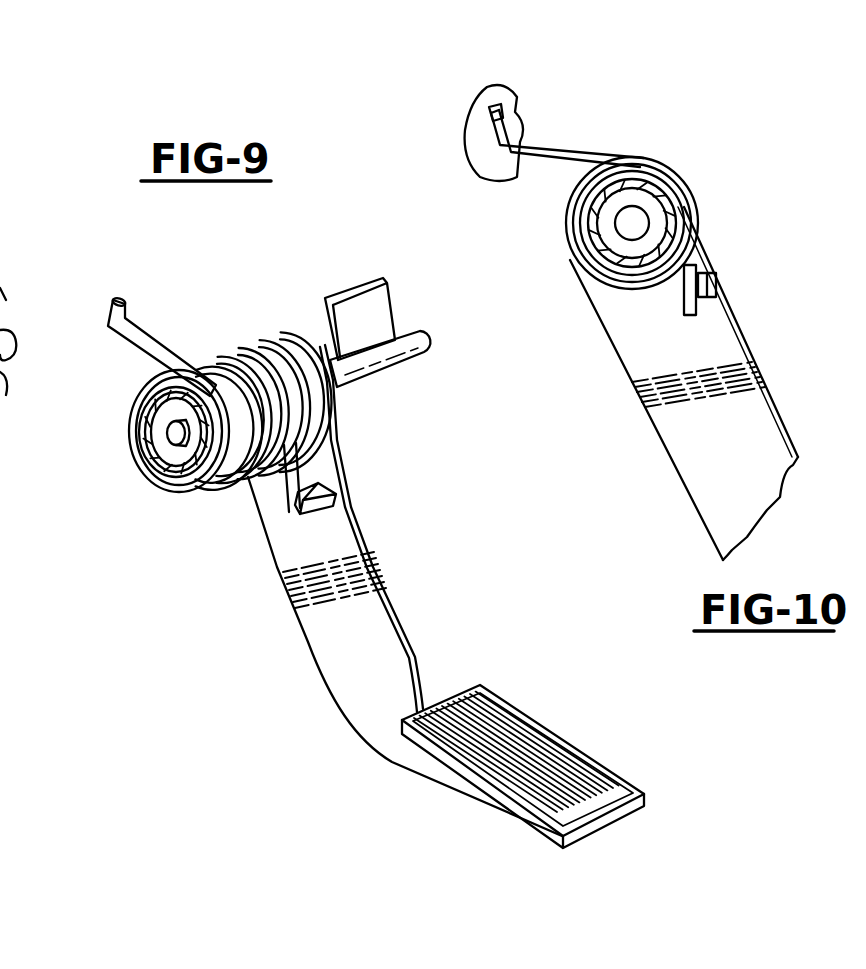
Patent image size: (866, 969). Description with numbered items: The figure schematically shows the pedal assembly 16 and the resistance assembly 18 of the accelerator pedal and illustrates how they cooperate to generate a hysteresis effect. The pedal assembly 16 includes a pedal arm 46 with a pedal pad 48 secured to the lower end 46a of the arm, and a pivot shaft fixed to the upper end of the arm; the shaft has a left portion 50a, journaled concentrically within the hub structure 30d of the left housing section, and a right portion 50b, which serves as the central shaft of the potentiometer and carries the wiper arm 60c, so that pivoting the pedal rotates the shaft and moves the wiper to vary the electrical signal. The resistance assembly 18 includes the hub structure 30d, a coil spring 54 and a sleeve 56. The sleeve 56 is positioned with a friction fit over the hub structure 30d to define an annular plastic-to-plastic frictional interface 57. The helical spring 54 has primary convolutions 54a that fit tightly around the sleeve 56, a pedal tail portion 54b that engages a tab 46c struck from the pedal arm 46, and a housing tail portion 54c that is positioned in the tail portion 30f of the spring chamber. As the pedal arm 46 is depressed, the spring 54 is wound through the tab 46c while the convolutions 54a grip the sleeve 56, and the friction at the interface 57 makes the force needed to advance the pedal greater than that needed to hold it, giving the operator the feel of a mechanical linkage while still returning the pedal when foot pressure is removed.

In FIG. 9, the pedal assembly 16 is at (482, 655).
In FIG. 10, the pedal assembly 16 is at (793, 405).
In FIG. 9, the resistance assembly 18 is at (126, 590).
In FIG. 10, the resistance assembly 18 is at (566, 292).
In FIG. 9, the hub structure 30d is at (141, 430).
In FIG. 10, the hub structure 30d is at (668, 198).
In FIG. 10, the tail portion 30f is at (527, 130).
In FIG. 9, the pedal arm 46 is at (393, 593).
In FIG. 10, the pedal arm 46 is at (708, 383).
In FIG. 9, the lower end of the pedal arm 46a is at (417, 771).
In FIG. 9, the tab 46c is at (312, 512).
In FIG. 10, the tab 46c is at (706, 298).
In FIG. 9, the pedal pad 48 is at (555, 750).
In FIG. 9, the left portion of pivot shaft 50a is at (176, 440).
In FIG. 10, the left portion of pivot shaft 50a is at (632, 238).
In FIG. 9, the right portion of pivot shaft 50b is at (416, 354).
In FIG. 9, the coil spring 54 is at (279, 396).
In FIG. 10, the coil spring 54 is at (659, 210).
In FIG. 9, the primary convolutions 54a is at (232, 345).
In FIG. 9, the pedal tail portion 54b is at (305, 455).
In FIG. 10, the pedal tail portion 54b is at (700, 285).
In FIG. 9, the housing tail portion 54c is at (112, 316).
In FIG. 10, the housing tail portion 54c is at (585, 152).
In FIG. 9, the sleeve 56 is at (217, 477).
In FIG. 10, the sleeve 56 is at (690, 210).
In FIG. 9, the frictional interface 57 is at (170, 470).
In FIG. 10, the frictional interface 57 is at (600, 220).
In FIG. 9, the wiper arm 60c is at (362, 300).